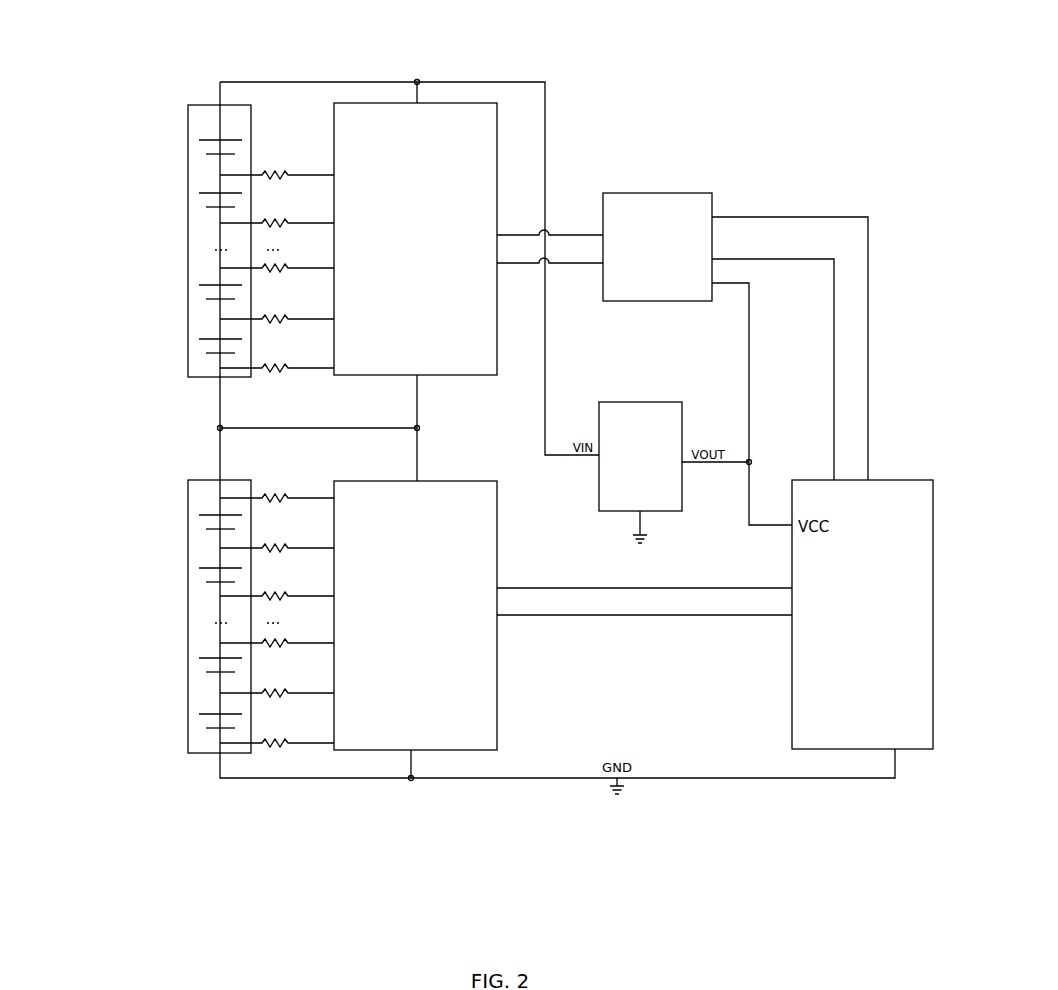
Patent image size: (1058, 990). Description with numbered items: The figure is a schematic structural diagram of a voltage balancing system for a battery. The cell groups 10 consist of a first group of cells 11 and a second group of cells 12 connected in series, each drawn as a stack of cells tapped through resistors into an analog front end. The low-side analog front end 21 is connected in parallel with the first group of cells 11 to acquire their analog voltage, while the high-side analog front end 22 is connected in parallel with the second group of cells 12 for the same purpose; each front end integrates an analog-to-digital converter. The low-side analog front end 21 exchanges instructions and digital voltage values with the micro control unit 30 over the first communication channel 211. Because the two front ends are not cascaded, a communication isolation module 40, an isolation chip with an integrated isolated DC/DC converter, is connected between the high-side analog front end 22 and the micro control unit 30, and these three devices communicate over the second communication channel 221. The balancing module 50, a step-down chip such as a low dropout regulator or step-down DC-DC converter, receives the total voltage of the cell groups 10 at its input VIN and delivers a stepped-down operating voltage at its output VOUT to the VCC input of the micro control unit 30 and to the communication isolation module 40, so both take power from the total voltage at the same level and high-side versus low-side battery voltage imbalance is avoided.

The cell groups 10 is at (112, 403).
The first group of cells 11 is at (193, 538).
The second group of cells 12 is at (190, 368).
The low-side analog front end 21 is at (384, 713).
The high-side analog front end 22 is at (407, 130).
The micro control unit 30 is at (848, 718).
The communication isolation module 40 is at (672, 207).
The balancing module 50 is at (670, 402).
The first communication channel 211 is at (708, 615).
The second communication channel 221 is at (853, 402).